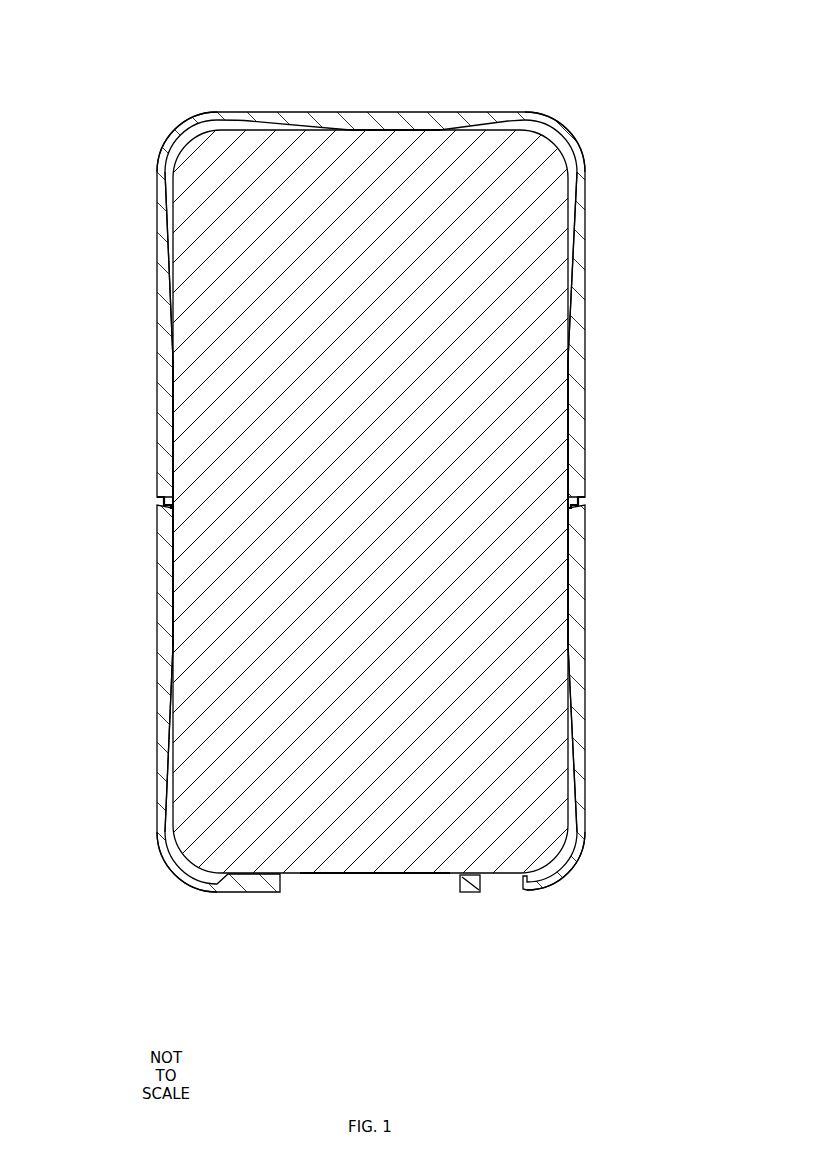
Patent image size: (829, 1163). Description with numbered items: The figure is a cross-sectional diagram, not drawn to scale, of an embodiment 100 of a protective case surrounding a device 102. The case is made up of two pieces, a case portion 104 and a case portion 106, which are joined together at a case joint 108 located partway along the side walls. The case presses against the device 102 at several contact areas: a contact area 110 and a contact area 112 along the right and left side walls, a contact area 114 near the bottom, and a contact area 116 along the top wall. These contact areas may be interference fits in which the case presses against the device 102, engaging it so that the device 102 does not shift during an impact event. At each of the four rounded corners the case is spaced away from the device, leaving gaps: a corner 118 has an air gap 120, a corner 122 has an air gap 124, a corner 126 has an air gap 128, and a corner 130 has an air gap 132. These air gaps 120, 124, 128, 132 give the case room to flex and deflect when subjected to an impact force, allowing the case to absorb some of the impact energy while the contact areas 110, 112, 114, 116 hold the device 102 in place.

The embodiment 100 is at (613, 948).
The device 102 is at (313, 288).
The case portion 104 is at (589, 256).
The case portion 106 is at (589, 646).
The case joint 108 is at (586, 496).
The contact area 110 is at (570, 421).
The contact area 112 is at (172, 465).
The contact area 114 is at (372, 873).
The contact area 116 is at (365, 128).
The corner 118 is at (183, 877).
The air gap 120 is at (172, 832).
The corner 122 is at (582, 848).
The air gap 124 is at (553, 862).
The corner 126 is at (567, 135).
The air gap 128 is at (570, 162).
The corner 130 is at (182, 121).
The air gap 132 is at (186, 148).